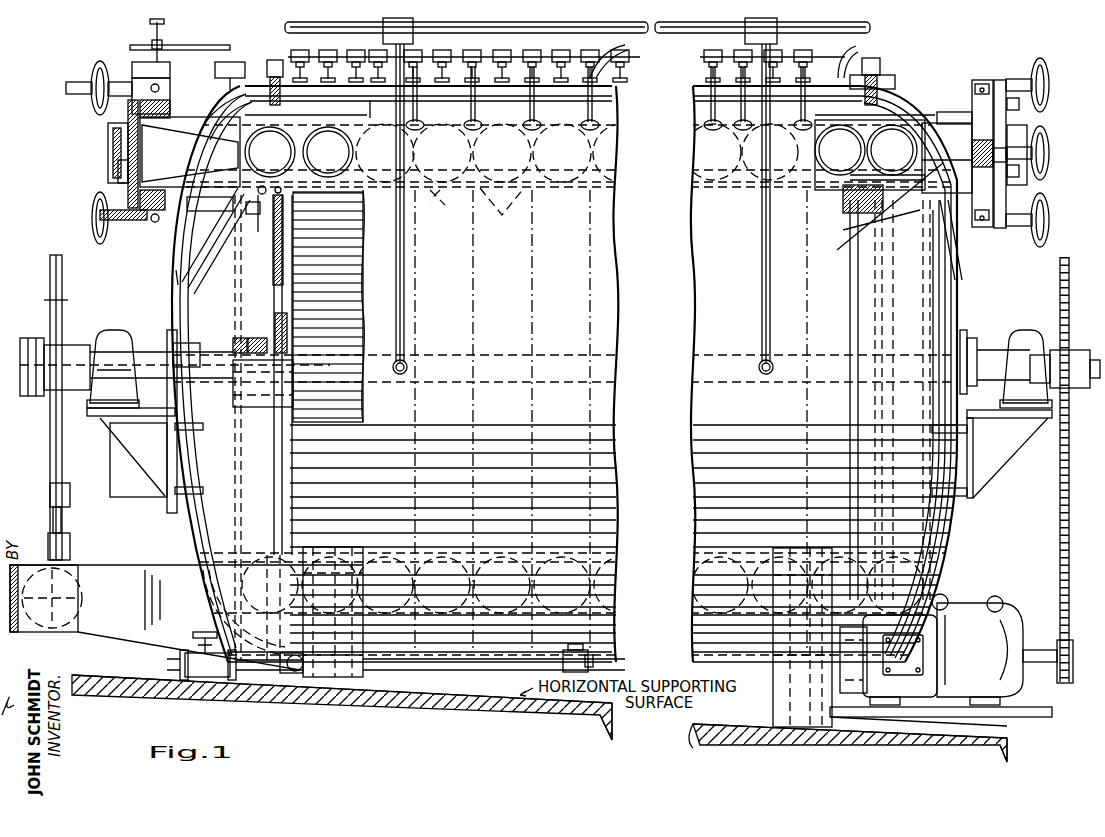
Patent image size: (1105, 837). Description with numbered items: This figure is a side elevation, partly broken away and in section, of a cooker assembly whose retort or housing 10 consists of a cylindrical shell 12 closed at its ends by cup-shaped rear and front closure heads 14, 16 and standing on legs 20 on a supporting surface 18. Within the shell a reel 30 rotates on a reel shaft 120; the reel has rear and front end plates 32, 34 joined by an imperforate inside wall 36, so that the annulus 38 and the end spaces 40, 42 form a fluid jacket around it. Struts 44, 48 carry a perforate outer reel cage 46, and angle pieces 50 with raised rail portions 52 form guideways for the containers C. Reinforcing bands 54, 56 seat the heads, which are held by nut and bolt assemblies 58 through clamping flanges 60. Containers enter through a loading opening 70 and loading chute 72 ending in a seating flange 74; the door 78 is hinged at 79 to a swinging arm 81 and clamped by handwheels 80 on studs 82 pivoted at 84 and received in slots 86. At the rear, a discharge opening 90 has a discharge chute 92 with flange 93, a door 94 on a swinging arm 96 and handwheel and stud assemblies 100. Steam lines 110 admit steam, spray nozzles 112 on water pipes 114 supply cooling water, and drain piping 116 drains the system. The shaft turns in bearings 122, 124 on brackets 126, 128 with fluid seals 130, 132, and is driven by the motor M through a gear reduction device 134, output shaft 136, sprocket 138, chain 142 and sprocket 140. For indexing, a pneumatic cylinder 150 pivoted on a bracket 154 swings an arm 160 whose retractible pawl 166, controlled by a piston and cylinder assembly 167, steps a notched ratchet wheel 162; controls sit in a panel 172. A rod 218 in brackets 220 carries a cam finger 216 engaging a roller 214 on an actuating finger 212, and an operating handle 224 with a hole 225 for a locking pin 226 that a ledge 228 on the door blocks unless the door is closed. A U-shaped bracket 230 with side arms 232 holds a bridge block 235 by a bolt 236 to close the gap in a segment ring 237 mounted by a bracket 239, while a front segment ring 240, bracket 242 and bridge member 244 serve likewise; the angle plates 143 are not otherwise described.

The retort or housing 10 is at (888, 60).
The cylindrical shell 12 is at (690, 85).
The rear closure head 14 is at (185, 527).
The front closure head 16 is at (965, 283).
The floor or supporting surface 18 is at (432, 693).
The legs 20 is at (772, 725).
The container-supporting cylinder, drum or reel 30 is at (332, 238).
The rear circular end plate 32 is at (263, 427).
The front circular end plate 34 is at (855, 207).
The inner imperforate cylindrical inside wall 36 is at (372, 222).
The cylindrical annulus or space 38 is at (342, 56).
The rear circular end space 40 is at (168, 278).
The front circular end space 42 is at (950, 240).
The supporting and spacing struts 44 is at (328, 152).
The cylindrical perforate outer reel cage 46 is at (372, 107).
The struts 48 is at (892, 150).
The elongated angle pieces 50 is at (428, 190).
The raised rail portions 52 is at (447, 199).
The circular reinforcing band 54 is at (270, 152).
The circular reinforcing band 56 is at (870, 155).
The nut and bolt assemblies 58 is at (268, 62).
The clamping flanges 60 is at (878, 60).
The loading opening 70 is at (952, 122).
The loading chute 72 is at (940, 114).
The seating flange 74 is at (978, 100).
The closure door 78 is at (1020, 195).
The hinge 79 is at (1048, 180).
The locking handwheels 80 is at (1030, 160).
The swinging arm 81 is at (1046, 110).
The studs 82 is at (1000, 230).
The pivot 84 is at (984, 226).
The open-ended radial slots 86 is at (1040, 226).
The discharge opening 90 is at (222, 135).
The discharge chute 92 is at (170, 110).
The flange 93 is at (150, 222).
The door 94 is at (118, 121).
The swinging arm 96 is at (110, 148).
The handwheel and stud assemblies 100 is at (94, 203).
The steam lines 110 is at (406, 264).
The spray nozzles 112 is at (740, 118).
The water pipes 114 is at (735, 56).
The drain piping 116 is at (622, 660).
The reel shaft 120 is at (141, 350).
The anti-friction bearing 122 is at (112, 328).
The anti-friction bearing 124 is at (1028, 328).
The bracket 126 is at (102, 425).
The bracket 128 is at (990, 470).
The fluid seal 130 is at (194, 340).
The fluid seal 132 is at (978, 330).
The gear reduction device 134 is at (1018, 605).
The output shaft 136 is at (1048, 665).
The sprocket 138 is at (1068, 640).
The sprocket 140 is at (1070, 395).
The chain 142 is at (1058, 528).
The nut 143 is at (247, 210).
The pneumatic cylinder 150 is at (186, 598).
The bracket 154 is at (120, 640).
The arm 160 is at (50, 452).
The notched ratchet wheel 162 is at (44, 300).
The retractible pawl 166 is at (52, 493).
The piston and cylinder assembly 167 is at (70, 545).
The control box or panel 172 is at (118, 492).
The actuating finger 212 is at (235, 232).
The roller 214 is at (258, 236).
The cam finger 216 is at (242, 250).
The elongated rod 218 is at (228, 118).
The brackets 220 is at (190, 225).
The operating handle 224 is at (190, 47).
The hole 225 is at (163, 44).
The locking pin 226 is at (152, 40).
The flange or ledge 228 is at (136, 62).
The U-shaped bracket 230 is at (190, 153).
The side arms 232 is at (112, 165).
The bridge member or block 235 is at (266, 174).
The bolt 236 is at (199, 205).
The can confining segment ring 237 is at (249, 360).
The bracket 239 is at (200, 578).
The segment ring 240 is at (925, 222).
The bracket 242 is at (878, 220).
The bridge member or block 244 is at (887, 166).
The containers C is at (502, 213).
The driving motor M is at (880, 700).